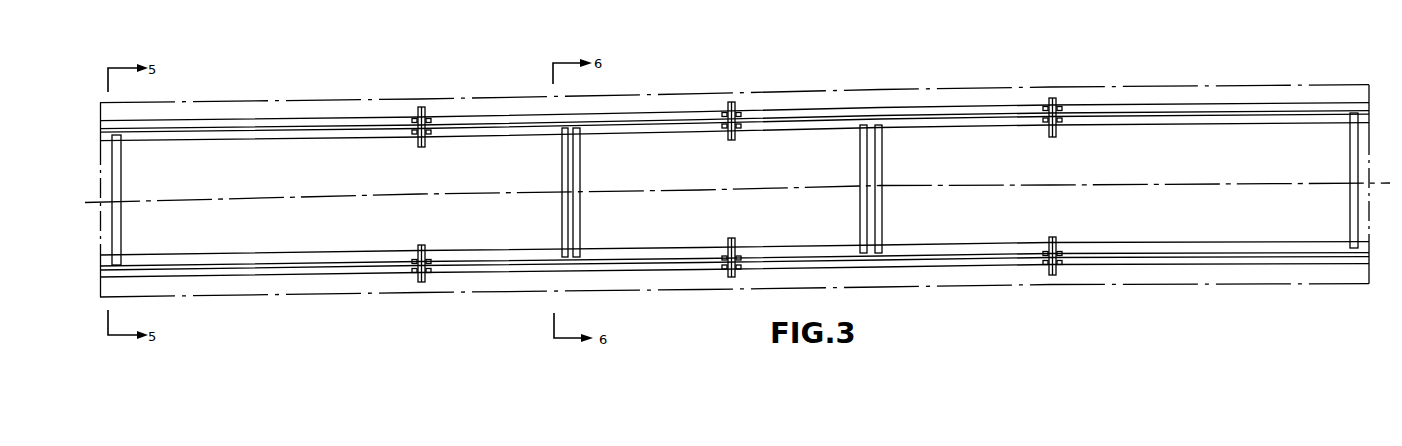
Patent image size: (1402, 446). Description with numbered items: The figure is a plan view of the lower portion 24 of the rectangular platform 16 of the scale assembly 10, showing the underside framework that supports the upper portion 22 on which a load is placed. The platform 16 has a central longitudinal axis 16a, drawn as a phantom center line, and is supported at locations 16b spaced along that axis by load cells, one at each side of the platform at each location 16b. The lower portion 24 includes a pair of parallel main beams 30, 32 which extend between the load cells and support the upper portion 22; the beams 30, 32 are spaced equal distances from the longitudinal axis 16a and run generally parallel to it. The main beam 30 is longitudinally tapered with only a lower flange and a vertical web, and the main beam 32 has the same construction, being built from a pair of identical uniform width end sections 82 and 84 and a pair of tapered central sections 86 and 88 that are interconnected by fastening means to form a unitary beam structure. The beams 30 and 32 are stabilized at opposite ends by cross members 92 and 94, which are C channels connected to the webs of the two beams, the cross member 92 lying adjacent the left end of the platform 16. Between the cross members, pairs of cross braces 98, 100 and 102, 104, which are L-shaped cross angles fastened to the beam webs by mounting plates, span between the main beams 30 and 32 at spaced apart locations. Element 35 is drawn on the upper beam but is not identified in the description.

The scale assembly 10 is at (976, 70).
The rectangular platform 16 is at (1011, 85).
The central longitudinal axis 16a is at (1243, 183).
The support locations 16b is at (420, 100).
The upper portion 22 is at (866, 90).
The lower portion 24 is at (697, 108).
The main beam 30 is at (460, 120).
The main beam 32 is at (333, 270).
The upper rail flange 35 is at (310, 118).
The end section 82 is at (287, 269).
The end section 84 is at (1193, 251).
The tapered central section 86 is at (500, 263).
The tapered central section 88 is at (960, 258).
The cross member 92 is at (124, 199).
The cross member 94 is at (1352, 183).
The cross brace 98 is at (562, 192).
The cross brace 100 is at (580, 183).
The cross brace 102 is at (861, 177).
The cross brace 104 is at (878, 173).